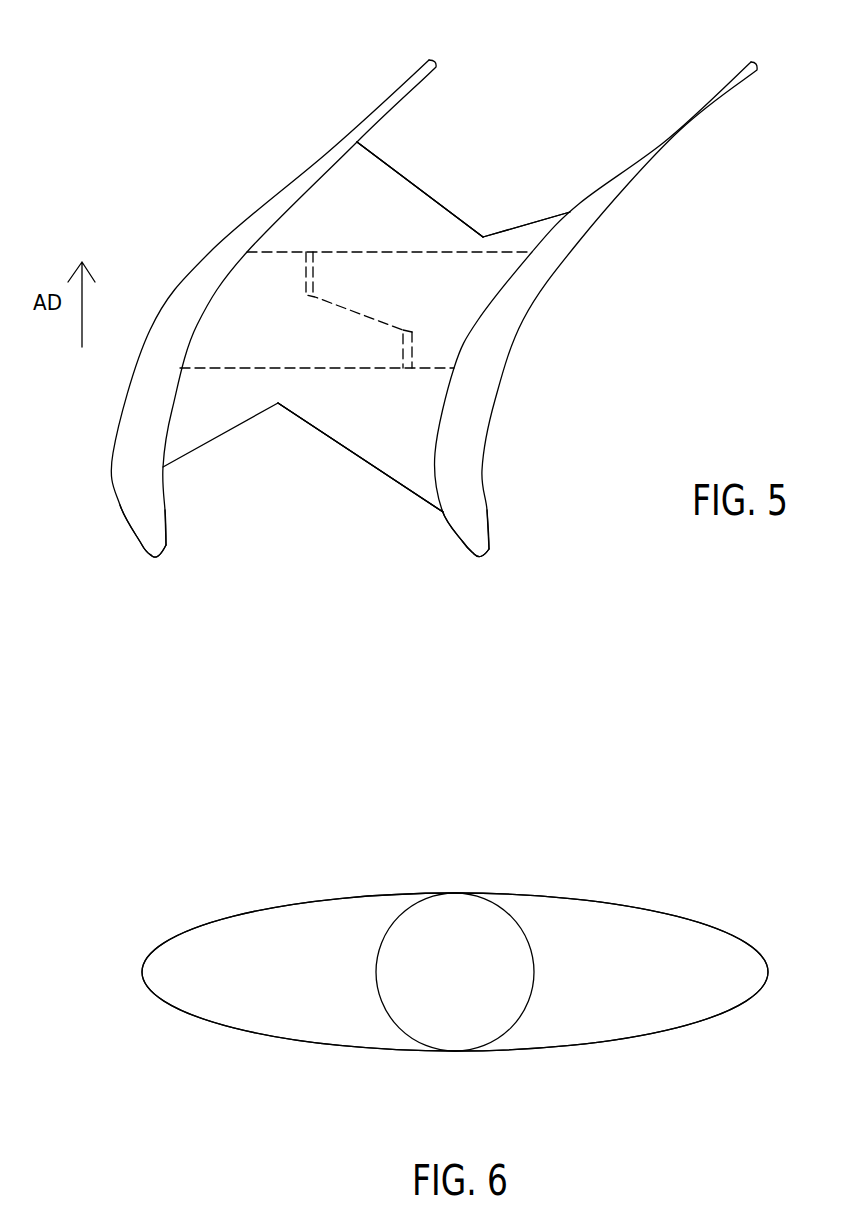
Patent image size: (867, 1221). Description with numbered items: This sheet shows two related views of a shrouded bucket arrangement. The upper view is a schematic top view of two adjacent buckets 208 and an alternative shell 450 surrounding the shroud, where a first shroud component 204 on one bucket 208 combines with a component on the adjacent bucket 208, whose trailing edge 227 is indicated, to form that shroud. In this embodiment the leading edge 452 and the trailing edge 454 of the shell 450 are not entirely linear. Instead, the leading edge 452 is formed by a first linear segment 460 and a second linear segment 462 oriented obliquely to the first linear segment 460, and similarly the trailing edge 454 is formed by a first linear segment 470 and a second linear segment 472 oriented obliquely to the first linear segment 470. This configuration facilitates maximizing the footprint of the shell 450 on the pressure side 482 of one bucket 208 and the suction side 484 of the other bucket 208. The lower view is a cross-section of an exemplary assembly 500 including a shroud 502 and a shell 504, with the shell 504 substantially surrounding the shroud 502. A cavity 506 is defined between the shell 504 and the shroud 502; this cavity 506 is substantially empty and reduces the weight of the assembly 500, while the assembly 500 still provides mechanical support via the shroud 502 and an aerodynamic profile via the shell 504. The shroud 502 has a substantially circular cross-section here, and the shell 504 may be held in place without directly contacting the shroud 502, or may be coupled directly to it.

In FIG. 5, the first shroud component 204 is at (473, 270).
In FIG. 5, the bucket 208 is at (340, 145).
In FIG. 5, the trailing edge 227 is at (300, 250).
In FIG. 5, the shell 450 is at (415, 494).
In FIG. 5, the leading edge 452 is at (370, 464).
In FIG. 5, the trailing edge 454 is at (445, 205).
In FIG. 5, the first linear segment 460 is at (180, 460).
In FIG. 5, the second linear segment 462 is at (313, 427).
In FIG. 5, the first linear segment 470 is at (403, 177).
In FIG. 5, the second linear segment 472 is at (540, 220).
In FIG. 5, the pressure side 482 is at (167, 542).
In FIG. 5, the suction side 484 is at (463, 542).
In FIG. 6, the assembly 500 is at (455, 946).
In FIG. 6, the shroud 502 is at (457, 1022).
In FIG. 6, the shell 504 is at (630, 1037).
In FIG. 6, the cavity 506 is at (662, 938).